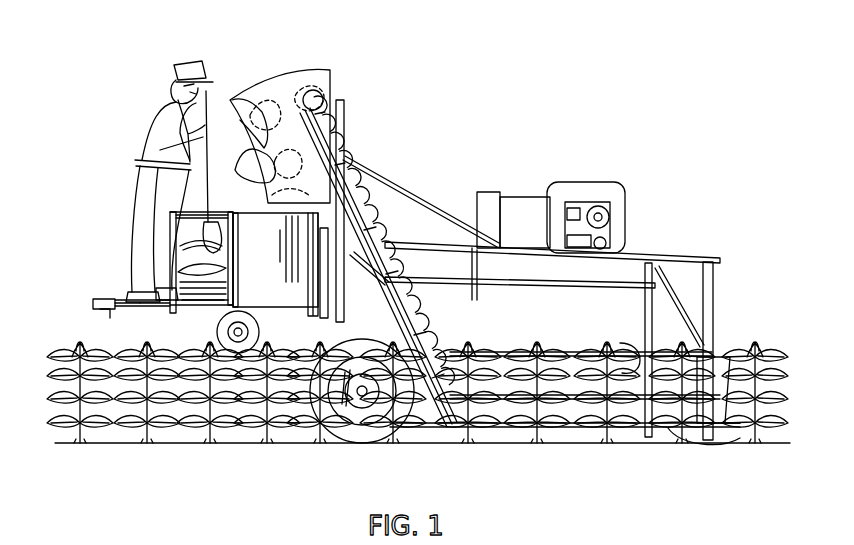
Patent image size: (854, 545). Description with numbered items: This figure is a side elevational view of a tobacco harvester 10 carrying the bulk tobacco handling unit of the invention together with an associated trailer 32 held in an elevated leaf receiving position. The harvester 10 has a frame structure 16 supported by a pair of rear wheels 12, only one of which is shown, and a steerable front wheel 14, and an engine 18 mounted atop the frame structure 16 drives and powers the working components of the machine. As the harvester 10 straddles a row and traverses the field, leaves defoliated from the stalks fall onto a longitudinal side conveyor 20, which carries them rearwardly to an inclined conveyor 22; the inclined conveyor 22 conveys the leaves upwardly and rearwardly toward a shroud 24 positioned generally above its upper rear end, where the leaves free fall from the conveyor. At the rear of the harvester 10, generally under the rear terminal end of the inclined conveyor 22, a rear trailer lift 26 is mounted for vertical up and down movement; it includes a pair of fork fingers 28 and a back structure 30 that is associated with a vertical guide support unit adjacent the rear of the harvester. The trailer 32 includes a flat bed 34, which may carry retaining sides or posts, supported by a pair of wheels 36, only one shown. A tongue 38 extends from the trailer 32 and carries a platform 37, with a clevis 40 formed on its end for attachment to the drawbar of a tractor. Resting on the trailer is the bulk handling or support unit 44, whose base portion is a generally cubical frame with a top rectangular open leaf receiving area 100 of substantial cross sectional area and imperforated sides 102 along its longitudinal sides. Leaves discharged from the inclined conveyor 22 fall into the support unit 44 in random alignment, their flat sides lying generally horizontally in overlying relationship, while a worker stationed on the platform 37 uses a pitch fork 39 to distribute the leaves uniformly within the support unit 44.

The tobacco harvester 10 is at (515, 187).
The rear wheel 12 is at (360, 436).
The steerable front wheel 14 is at (715, 440).
The frame structure 16 is at (688, 268).
The engine 18 is at (580, 186).
The longitudinal side conveyor 20 is at (566, 418).
The inclined conveyor 22 is at (403, 314).
The shroud 24 is at (298, 70).
The rear trailer lift 26 is at (267, 393).
The fork fingers 28 is at (266, 310).
The back structure 30 is at (325, 280).
The trailer 32 is at (107, 290).
The flat bed 34 is at (204, 305).
The trailer wheel 36 is at (210, 393).
The platform 37 is at (146, 303).
The tongue 38 is at (131, 307).
The pitch fork 39 is at (207, 147).
The clevis 40 is at (106, 302).
The bulk handling or support unit 44 is at (157, 244).
The top rectangular open leaf receiving area 100 is at (176, 226).
The imperforated side 102 is at (166, 280).